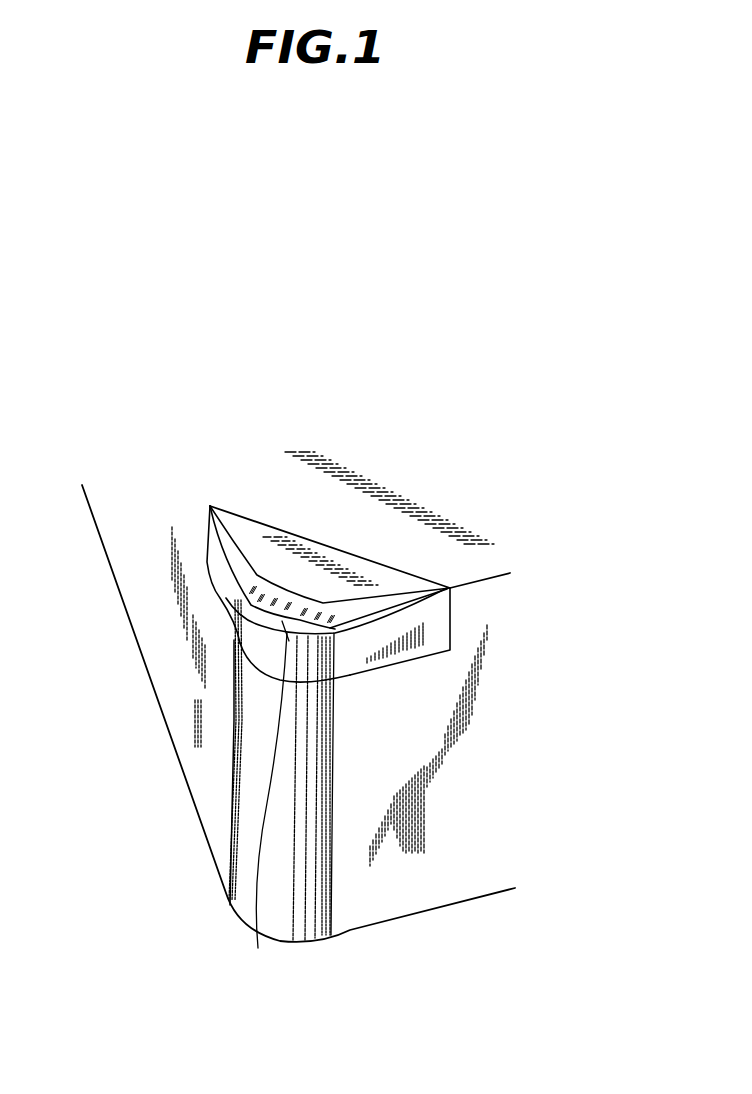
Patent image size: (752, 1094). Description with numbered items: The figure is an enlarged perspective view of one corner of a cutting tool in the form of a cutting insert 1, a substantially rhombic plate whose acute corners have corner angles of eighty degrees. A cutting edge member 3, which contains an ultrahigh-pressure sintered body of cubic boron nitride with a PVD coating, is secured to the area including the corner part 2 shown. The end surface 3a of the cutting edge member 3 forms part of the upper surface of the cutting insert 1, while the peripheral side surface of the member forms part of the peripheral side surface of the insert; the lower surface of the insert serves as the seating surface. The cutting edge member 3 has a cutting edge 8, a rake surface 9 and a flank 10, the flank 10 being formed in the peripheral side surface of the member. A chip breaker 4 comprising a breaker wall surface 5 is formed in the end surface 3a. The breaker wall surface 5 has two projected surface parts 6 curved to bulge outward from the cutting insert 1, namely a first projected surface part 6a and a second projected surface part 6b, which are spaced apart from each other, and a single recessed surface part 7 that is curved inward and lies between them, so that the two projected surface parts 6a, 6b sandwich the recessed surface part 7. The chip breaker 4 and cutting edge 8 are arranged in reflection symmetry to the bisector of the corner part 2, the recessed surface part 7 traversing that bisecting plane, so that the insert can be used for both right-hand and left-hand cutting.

The cutting insert 1 is at (383, 575).
The corner part 2 is at (255, 628).
The cutting edge member 3 is at (232, 599).
The end surface 3a is at (292, 593).
The chip breaker 4 is at (240, 595).
The breaker wall surface 5 is at (252, 577).
The projected surface part 6 is at (328, 620).
The first projected surface part 6a is at (340, 600).
The second projected surface part 6b is at (277, 582).
The recessed surface part 7 is at (306, 600).
The cutting edge 8 is at (332, 657).
The rake surface 9 is at (267, 806).
The flank 10 is at (279, 652).